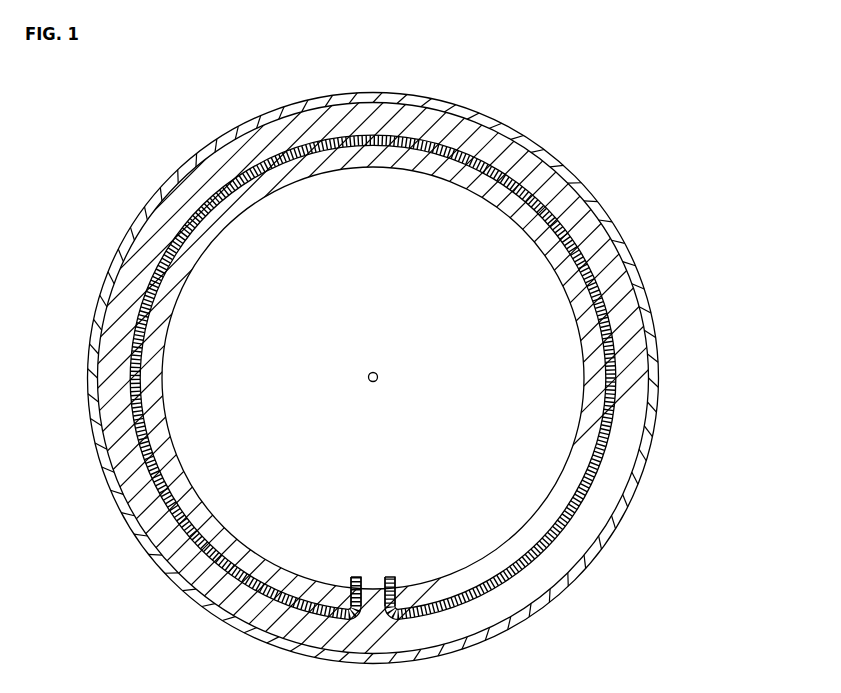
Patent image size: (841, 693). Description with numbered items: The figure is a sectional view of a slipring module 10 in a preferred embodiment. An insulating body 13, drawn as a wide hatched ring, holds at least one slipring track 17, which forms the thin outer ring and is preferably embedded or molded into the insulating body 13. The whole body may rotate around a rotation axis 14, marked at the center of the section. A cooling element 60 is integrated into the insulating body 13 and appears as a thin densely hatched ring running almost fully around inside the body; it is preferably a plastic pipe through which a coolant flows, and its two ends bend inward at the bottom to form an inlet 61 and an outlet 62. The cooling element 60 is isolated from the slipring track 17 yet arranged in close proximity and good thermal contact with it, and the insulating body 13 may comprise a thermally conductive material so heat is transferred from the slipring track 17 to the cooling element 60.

The slipring module 10 is at (420, 376).
The insulating body 13 is at (148, 373).
The rotation axis 14 is at (367, 377).
The slipring track 17 is at (657, 378).
The cooling element 60 is at (373, 377).
The inlet 61 is at (357, 576).
The outlet 62 is at (389, 576).